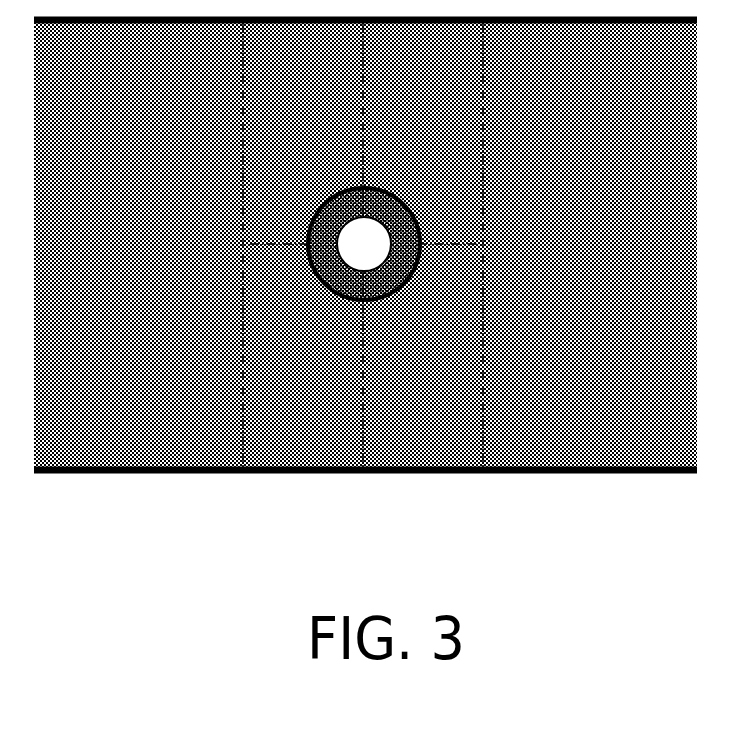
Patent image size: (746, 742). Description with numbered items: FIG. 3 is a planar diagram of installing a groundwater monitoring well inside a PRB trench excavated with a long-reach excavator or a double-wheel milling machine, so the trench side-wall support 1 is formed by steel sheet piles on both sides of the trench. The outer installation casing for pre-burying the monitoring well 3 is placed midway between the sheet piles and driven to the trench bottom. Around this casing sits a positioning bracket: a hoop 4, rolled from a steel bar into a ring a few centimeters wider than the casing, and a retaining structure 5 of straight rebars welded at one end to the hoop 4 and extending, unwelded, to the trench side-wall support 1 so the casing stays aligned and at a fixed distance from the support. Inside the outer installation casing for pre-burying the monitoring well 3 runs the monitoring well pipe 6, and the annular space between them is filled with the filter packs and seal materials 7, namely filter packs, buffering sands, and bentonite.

The trench side-wall support 1 is at (365, 245).
The outer installation casing for pre-burying the monitoring well 3 is at (457, 215).
The hoop 4 is at (448, 165).
The retaining structure 5 is at (177, 245).
The monitoring well pipe 6 is at (422, 275).
The filter packs and seal materials 7 is at (390, 309).